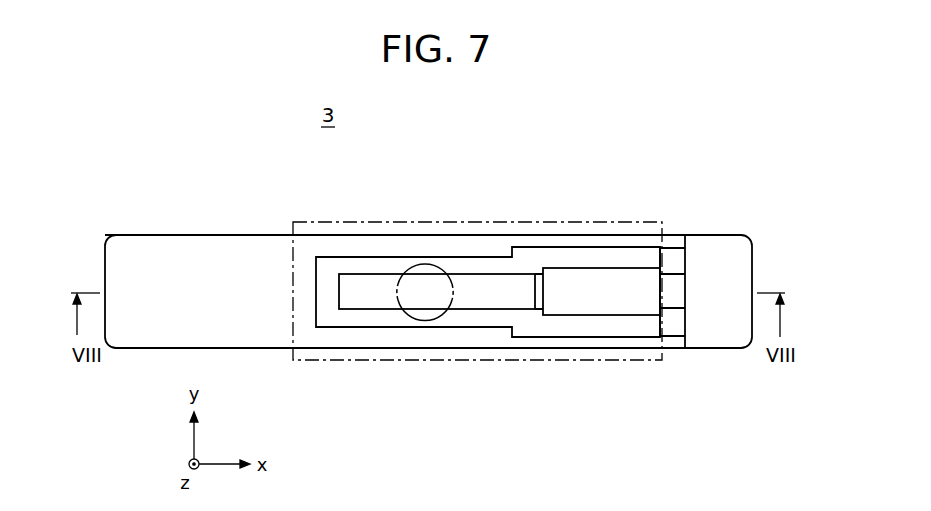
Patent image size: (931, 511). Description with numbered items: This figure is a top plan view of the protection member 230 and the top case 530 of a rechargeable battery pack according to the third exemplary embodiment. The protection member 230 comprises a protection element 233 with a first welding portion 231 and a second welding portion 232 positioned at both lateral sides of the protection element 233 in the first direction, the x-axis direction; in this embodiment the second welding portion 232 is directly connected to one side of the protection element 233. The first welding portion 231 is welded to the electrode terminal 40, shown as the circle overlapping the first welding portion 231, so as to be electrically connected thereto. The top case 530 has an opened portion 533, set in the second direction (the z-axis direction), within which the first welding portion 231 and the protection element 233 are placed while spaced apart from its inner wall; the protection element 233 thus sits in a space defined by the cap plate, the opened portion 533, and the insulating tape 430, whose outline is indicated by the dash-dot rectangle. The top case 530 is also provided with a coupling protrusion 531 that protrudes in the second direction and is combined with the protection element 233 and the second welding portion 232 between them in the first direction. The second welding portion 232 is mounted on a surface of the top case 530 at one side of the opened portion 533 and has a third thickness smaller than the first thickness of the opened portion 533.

The protection member 230 is at (752, 233).
The top case 530 is at (215, 233).
The second welding portion 232 is at (710, 258).
The coupling protrusion 531 is at (673, 327).
The opened portion 533 is at (593, 338).
The first welding portion 231 is at (366, 287).
The electrode terminal 40 is at (425, 264).
The protection element 233 is at (615, 285).
The insulating tape 430 is at (490, 222).